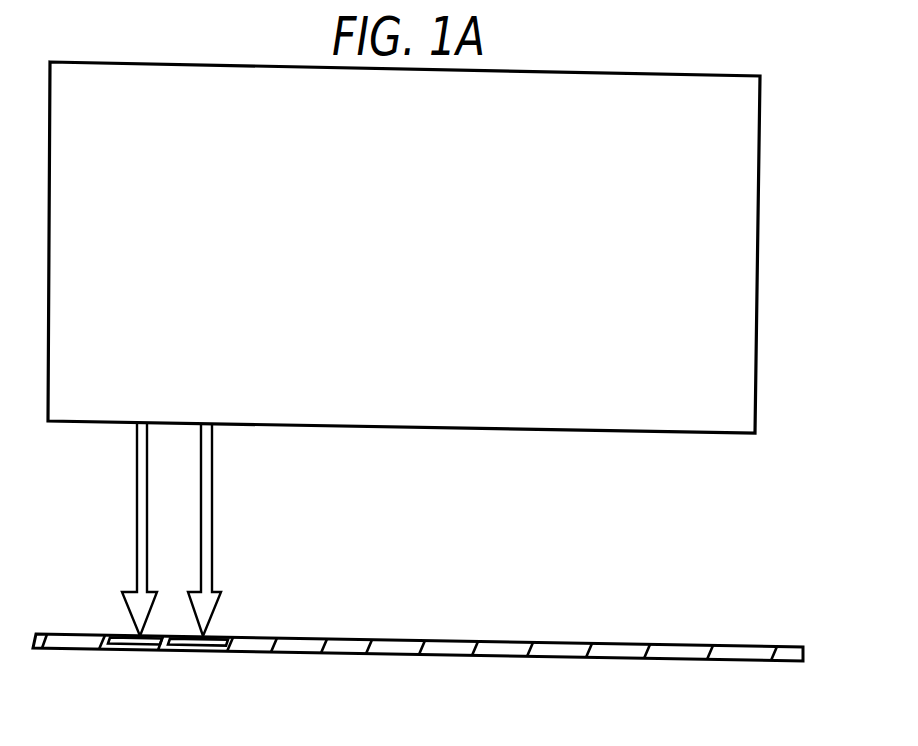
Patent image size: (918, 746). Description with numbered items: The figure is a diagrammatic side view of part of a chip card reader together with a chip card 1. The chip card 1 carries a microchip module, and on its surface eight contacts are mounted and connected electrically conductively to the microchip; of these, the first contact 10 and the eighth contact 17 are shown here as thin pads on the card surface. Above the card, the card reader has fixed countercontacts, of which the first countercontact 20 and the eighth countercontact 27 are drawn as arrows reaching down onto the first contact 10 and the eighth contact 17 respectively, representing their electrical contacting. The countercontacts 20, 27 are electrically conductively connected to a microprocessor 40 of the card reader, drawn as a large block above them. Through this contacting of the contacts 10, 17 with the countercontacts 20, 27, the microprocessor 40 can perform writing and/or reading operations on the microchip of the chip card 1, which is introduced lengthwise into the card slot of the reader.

The chip card 1 is at (338, 650).
The first contact 10 is at (142, 650).
The eighth contact 17 is at (208, 650).
The first countercontact 20 is at (137, 520).
The eighth countercontact 27 is at (212, 512).
The microprocessor 40 is at (760, 328).